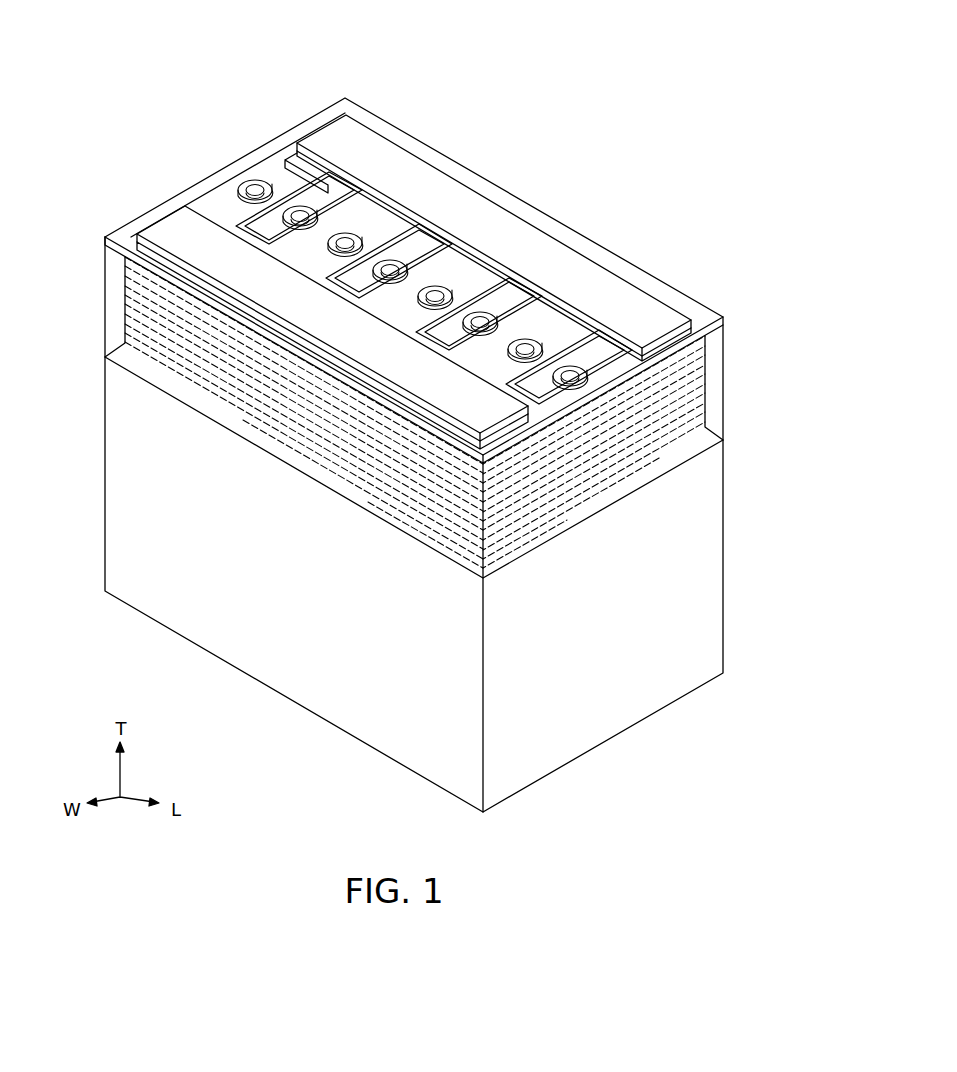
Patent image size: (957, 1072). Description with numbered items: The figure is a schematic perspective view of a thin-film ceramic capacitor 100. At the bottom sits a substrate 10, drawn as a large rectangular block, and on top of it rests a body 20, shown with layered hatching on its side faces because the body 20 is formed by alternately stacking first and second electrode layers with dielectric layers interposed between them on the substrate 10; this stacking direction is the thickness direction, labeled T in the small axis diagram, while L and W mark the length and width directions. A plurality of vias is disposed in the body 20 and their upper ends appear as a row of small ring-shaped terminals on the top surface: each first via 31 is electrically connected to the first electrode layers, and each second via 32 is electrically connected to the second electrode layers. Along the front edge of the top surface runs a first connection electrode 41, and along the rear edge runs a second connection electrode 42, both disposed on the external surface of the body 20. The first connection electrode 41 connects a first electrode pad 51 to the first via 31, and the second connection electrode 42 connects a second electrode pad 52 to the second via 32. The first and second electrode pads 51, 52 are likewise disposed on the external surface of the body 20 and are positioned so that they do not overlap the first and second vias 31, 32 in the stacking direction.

The thin-film ceramic capacitor 100 is at (606, 36).
The substrate 10 is at (700, 578).
The body 20 is at (713, 367).
The first via 31 is at (362, 232).
The second via 32 is at (492, 317).
The first connection electrode 41 is at (152, 227).
The second connection electrode 42 is at (665, 300).
The first electrode pad 51 is at (172, 214).
The second electrode pad 52 is at (320, 140).